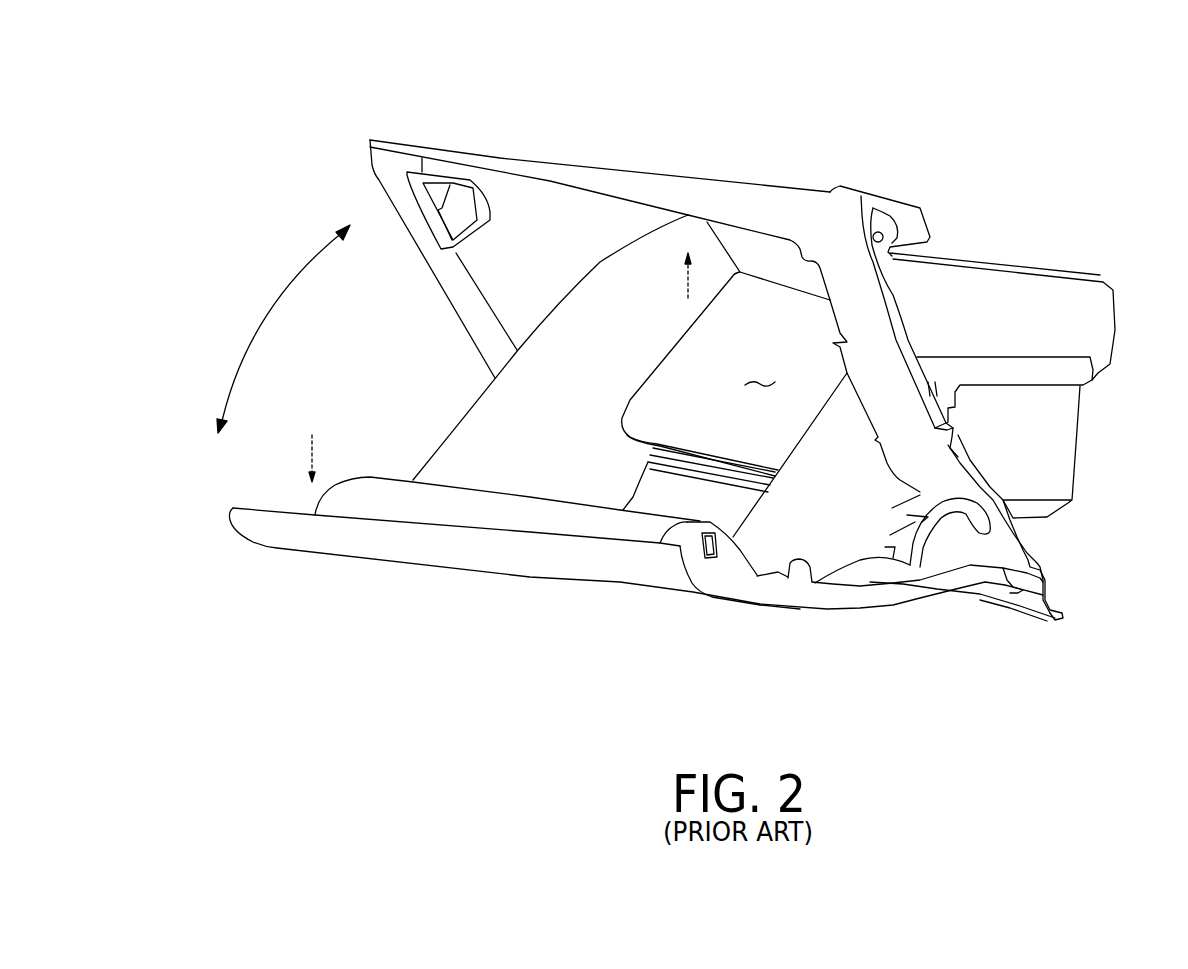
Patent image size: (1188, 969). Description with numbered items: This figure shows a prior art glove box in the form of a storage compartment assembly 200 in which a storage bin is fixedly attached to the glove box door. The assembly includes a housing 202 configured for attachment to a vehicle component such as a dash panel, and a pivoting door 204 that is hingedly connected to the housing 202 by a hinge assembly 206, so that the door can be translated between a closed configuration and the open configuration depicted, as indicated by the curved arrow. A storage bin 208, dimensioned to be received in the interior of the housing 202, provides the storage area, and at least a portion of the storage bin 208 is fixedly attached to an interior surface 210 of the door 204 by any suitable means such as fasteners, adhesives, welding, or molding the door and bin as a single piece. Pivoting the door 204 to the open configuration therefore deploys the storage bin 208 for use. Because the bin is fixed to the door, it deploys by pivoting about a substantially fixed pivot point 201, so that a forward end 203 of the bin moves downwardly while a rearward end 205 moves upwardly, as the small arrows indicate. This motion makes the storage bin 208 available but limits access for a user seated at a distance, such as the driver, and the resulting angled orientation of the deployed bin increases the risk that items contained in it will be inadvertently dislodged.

The storage compartment assembly 200 is at (258, 63).
The fixed pivot point 201 is at (960, 450).
The housing 202 is at (968, 248).
The forward end 203 is at (388, 490).
The pivoting door 204 is at (567, 583).
The rearward end 205 is at (767, 255).
The hinge assembly 206 is at (1037, 563).
The storage bin 208 is at (590, 414).
The interior surface 210 is at (808, 584).